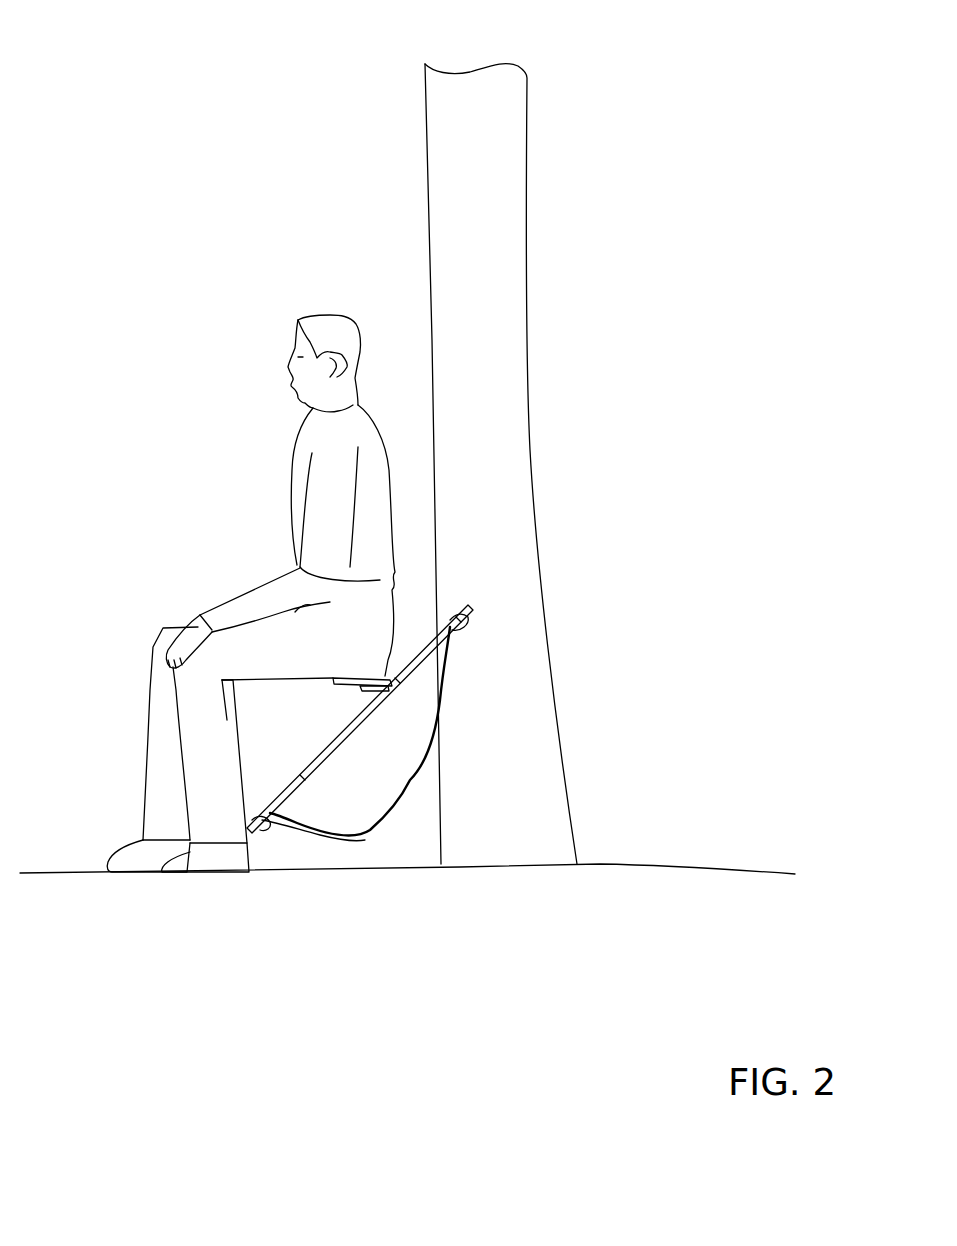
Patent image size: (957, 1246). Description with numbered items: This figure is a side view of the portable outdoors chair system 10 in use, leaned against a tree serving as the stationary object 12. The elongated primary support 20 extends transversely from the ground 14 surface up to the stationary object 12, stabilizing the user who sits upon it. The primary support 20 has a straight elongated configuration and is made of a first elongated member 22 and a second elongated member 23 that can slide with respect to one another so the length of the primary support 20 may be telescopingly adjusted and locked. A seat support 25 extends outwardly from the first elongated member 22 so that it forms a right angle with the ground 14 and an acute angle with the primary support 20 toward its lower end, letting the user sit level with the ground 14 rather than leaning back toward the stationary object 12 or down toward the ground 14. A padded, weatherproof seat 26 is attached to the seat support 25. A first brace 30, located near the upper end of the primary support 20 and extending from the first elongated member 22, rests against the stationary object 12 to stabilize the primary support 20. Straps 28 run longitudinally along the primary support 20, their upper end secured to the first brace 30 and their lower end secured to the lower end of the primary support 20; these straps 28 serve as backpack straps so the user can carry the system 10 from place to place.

The portable outdoors chair system 10 is at (163, 152).
The stationary object 12 is at (534, 508).
The ground 14 is at (665, 864).
The primary support 20 is at (444, 752).
The first elongated member 22 is at (330, 755).
The second elongated member 23 is at (253, 830).
The seat support 25 is at (370, 690).
The seat 26 is at (333, 683).
The straps 28 is at (373, 712).
The first brace 30 is at (468, 617).